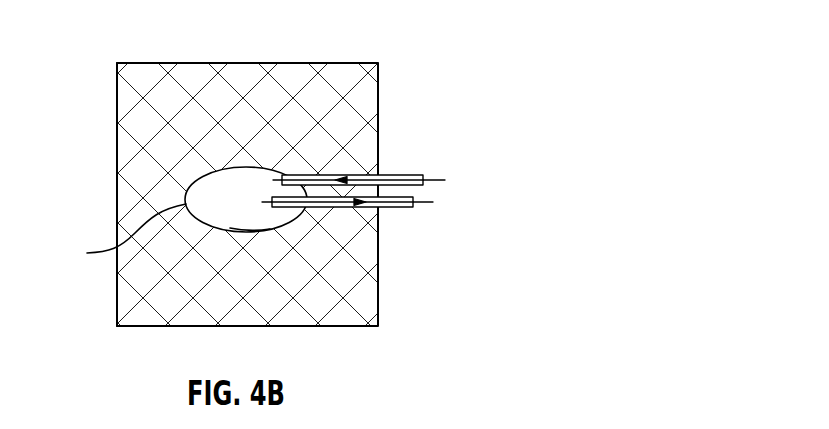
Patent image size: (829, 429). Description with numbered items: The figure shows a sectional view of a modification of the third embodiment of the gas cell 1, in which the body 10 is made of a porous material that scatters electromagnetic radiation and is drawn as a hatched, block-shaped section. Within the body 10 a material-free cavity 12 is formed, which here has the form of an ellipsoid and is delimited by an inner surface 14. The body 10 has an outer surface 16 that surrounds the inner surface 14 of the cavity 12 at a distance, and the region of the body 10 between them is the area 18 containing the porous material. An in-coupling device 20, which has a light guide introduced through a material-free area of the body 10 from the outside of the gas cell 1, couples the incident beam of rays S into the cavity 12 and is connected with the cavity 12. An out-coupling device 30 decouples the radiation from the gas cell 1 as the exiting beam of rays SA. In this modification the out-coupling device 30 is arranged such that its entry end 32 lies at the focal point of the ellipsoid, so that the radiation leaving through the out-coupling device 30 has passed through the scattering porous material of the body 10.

The gas cell 1 is at (113, 42).
The body 10 is at (221, 168).
The cavity 12 is at (221, 168).
The inner surface 14 is at (122, 238).
The outer surface 16 is at (117, 125).
The area containing the porous material 18 is at (133, 195).
The in-coupling device 20 is at (397, 173).
The out-coupling device 30 is at (400, 208).
The entry end 32 is at (258, 231).
The incident beam of rays S is at (443, 180).
The exiting beam of rays SA is at (430, 203).